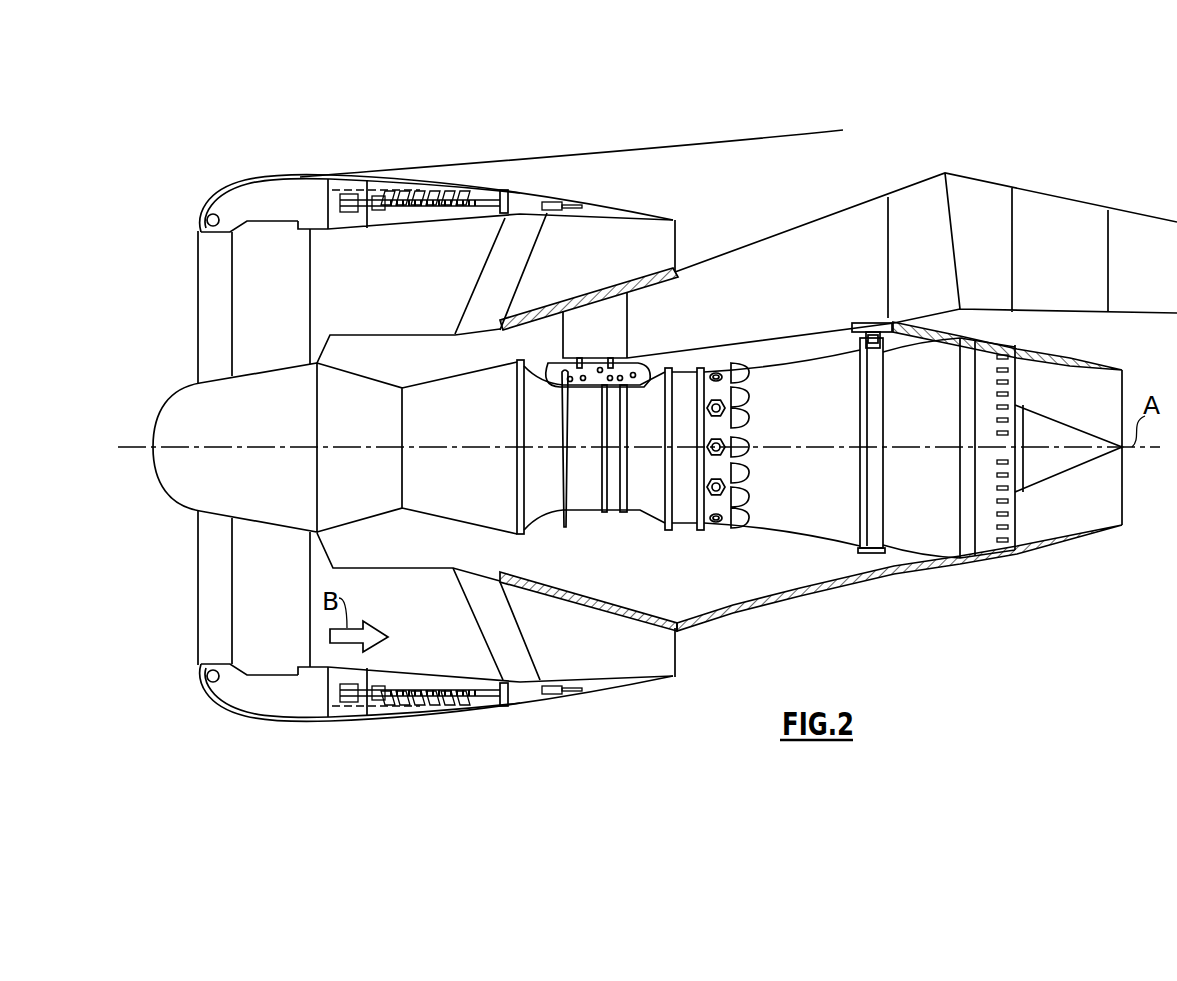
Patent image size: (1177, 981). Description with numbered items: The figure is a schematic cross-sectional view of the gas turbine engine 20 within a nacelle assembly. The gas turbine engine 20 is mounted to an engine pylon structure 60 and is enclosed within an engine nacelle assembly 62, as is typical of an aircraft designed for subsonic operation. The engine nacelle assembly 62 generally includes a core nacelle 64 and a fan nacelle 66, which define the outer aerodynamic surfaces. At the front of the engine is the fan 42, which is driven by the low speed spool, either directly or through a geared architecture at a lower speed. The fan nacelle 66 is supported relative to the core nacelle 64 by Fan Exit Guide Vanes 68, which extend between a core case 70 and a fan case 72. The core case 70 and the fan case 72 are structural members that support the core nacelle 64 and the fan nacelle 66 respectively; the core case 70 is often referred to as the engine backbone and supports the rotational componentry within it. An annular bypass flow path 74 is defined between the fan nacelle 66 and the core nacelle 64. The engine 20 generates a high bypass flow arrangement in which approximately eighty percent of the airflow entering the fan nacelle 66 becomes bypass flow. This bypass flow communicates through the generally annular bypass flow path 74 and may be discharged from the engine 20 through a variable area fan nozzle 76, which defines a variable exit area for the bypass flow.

The gas turbine engine 20 is at (733, 90).
The fan 42 is at (281, 306).
The engine pylon structure 60 is at (1057, 227).
The engine nacelle assembly 62 is at (275, 166).
The core nacelle 64 is at (853, 585).
The fan nacelle 66 is at (298, 722).
The Fan Exit Guide Vanes 68 is at (489, 289).
The core case 70 is at (402, 352).
The fan case 72 is at (319, 232).
The annular bypass flow path 74 is at (432, 621).
The variable area fan nozzle 76 is at (580, 216).